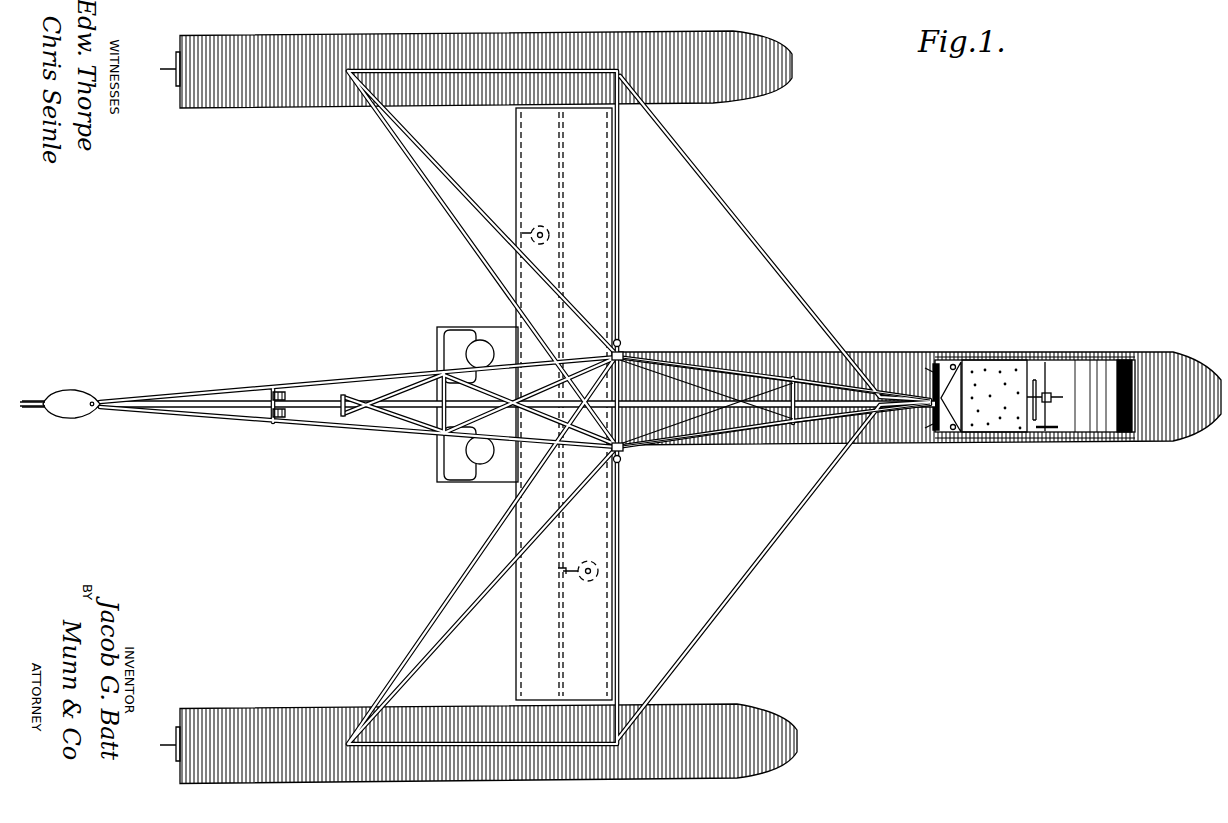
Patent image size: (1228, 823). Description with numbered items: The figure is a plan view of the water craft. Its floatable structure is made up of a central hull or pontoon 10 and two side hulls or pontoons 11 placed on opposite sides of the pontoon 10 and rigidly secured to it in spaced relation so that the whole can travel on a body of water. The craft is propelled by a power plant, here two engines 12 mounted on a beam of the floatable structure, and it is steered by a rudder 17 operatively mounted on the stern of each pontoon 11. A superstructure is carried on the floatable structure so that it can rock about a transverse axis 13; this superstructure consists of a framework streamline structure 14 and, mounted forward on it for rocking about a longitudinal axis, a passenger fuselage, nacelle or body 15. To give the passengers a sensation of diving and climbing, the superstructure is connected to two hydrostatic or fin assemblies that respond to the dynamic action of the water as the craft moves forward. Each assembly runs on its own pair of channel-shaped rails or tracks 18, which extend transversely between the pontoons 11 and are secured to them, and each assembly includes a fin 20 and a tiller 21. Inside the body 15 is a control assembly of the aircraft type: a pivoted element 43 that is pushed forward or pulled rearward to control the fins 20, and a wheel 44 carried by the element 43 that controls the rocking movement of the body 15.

The central hull or pontoon 10 is at (925, 351).
The hulls or pontoons 11 is at (333, 107).
The engines 12 is at (446, 355).
The transverse axis 13 is at (622, 346).
The framework streamline structure 14 is at (338, 420).
The passenger fuselage, nacelle or body 15 is at (998, 440).
The rudder 17 is at (166, 66).
The rails or tracks 18 is at (560, 180).
The fin 20 is at (512, 234).
The tiller 21 is at (540, 225).
The pivoted element 43 is at (1050, 402).
The wheel 44 is at (1035, 378).